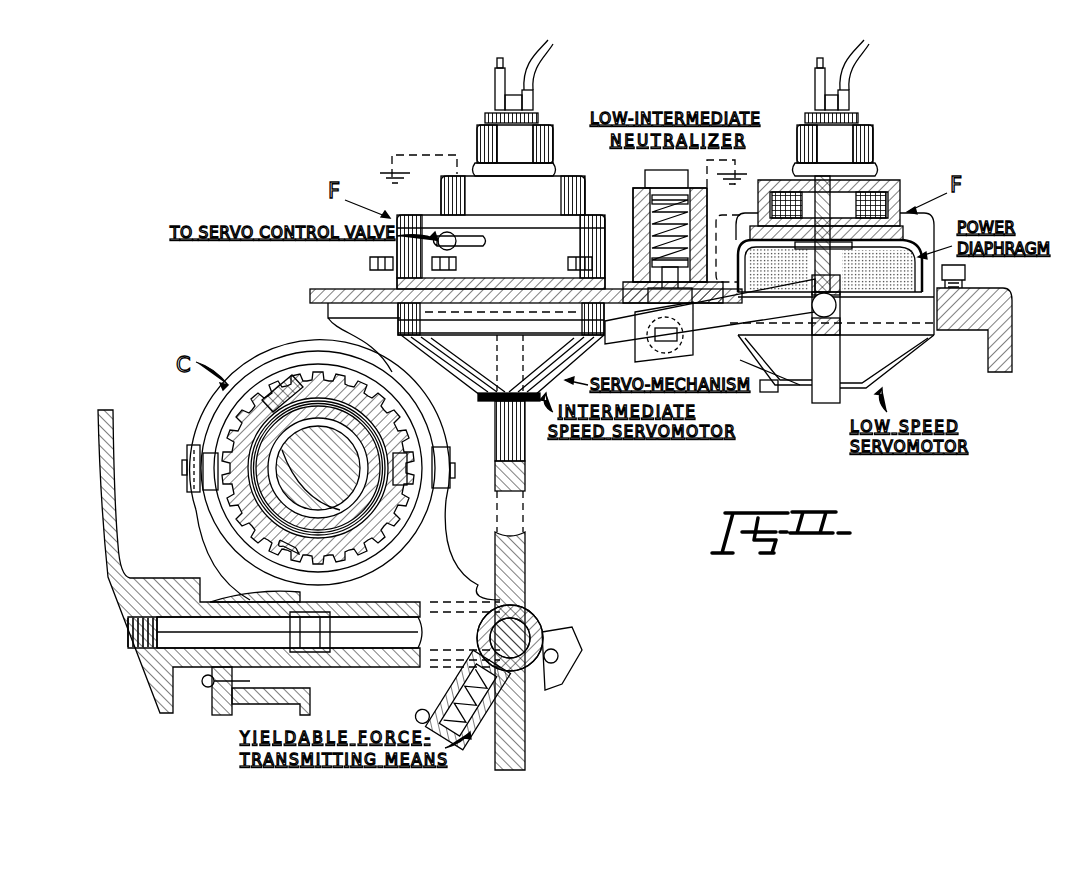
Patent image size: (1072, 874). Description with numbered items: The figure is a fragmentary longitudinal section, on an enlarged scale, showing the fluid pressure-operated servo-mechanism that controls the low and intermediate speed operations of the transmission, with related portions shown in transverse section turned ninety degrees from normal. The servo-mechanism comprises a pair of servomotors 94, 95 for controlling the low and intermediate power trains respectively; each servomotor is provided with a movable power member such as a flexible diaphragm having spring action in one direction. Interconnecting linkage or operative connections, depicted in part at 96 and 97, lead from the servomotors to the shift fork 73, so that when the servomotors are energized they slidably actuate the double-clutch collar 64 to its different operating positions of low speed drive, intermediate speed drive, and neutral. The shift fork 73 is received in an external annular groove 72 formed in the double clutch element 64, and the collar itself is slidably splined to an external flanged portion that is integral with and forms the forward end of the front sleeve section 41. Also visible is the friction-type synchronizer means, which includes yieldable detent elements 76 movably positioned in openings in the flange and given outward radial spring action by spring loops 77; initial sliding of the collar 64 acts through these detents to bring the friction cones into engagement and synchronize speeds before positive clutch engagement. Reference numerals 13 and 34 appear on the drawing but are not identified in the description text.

The housing plate 13 is at (350, 300).
The shaft 34 is at (318, 468).
The front sleeve section 41 is at (324, 423).
The double-clutch collar 64 is at (250, 428).
The external annular groove 72 is at (268, 382).
The shift fork 73 is at (203, 480).
The yieldable detent elements 76 is at (420, 458).
The spring loops 77 is at (247, 444).
The servomotor 94 is at (915, 352).
The servomotor 95 is at (474, 380).
The interconnecting linkage 96 is at (521, 545).
The interconnecting linkage 97 is at (700, 335).